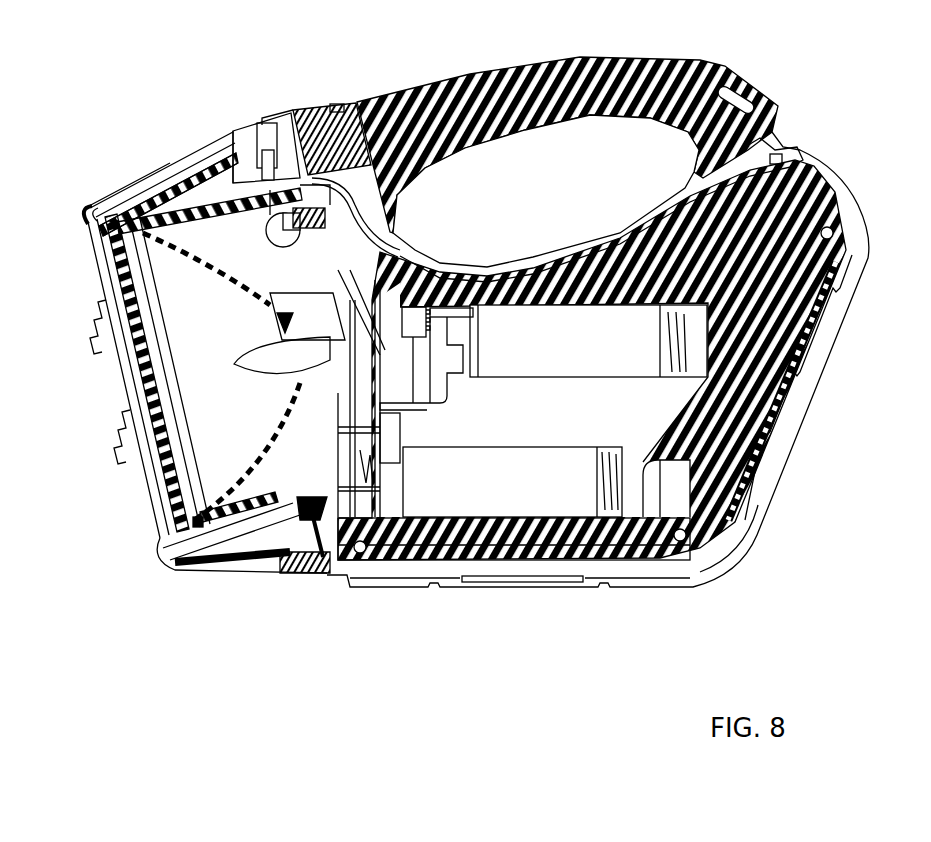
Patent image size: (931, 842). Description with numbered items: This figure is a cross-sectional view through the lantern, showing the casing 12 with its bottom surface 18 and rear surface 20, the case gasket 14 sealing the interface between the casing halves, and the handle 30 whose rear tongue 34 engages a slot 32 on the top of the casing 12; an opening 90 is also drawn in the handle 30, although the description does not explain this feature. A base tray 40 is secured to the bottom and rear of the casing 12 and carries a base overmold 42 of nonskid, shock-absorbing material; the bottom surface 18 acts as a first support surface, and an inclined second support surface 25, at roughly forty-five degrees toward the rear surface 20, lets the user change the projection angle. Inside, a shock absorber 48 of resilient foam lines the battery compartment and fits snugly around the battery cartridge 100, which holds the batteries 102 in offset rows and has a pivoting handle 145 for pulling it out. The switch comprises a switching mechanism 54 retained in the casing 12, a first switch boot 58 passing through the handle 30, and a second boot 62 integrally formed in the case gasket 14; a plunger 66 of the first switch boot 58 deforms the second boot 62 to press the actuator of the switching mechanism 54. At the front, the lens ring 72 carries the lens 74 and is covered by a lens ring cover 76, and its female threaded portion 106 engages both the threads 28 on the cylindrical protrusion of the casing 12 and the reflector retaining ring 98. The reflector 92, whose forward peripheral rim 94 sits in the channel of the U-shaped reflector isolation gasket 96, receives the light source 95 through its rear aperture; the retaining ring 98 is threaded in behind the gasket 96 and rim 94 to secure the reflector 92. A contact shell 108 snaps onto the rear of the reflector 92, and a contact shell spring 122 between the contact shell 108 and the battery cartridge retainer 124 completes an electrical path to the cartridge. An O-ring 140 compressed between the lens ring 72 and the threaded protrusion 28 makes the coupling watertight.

The casing 12 is at (398, 232).
The case gasket 14 is at (810, 180).
The bottom surface 18 is at (600, 590).
The rear surface 20 is at (868, 232).
The second support surface 25 is at (778, 470).
The threads 28 is at (210, 185).
The handle 30 is at (598, 68).
The slot 32 is at (678, 150).
The tongue 34 is at (782, 158).
The base tray 40 is at (410, 565).
The base overmold 42 is at (745, 515).
The shock absorber 48 is at (800, 290).
The switching mechanism 54 is at (382, 192).
The first switch boot 58 is at (345, 105).
The second boot 62 is at (296, 130).
The plunger 66 is at (310, 120).
The lens ring 72 is at (223, 145).
The lens 74 is at (120, 390).
The lens ring cover 76 is at (78, 213).
The slot 90 is at (748, 90).
The reflector 92 is at (245, 560).
The forward peripheral rim 94 is at (185, 565).
The light source 95 is at (245, 353).
The reflector isolation gasket 96 is at (120, 195).
The reflector retaining ring 98 is at (165, 190).
The battery cartridge 100 is at (720, 430).
The batteries 102 is at (548, 318).
The female threaded portion 106 is at (182, 175).
The contact shell 108 is at (280, 425).
The contact shell spring 122 is at (270, 300).
The battery cartridge retainer 124 is at (238, 292).
The O-ring 140 is at (310, 565).
The handle 145 is at (420, 265).